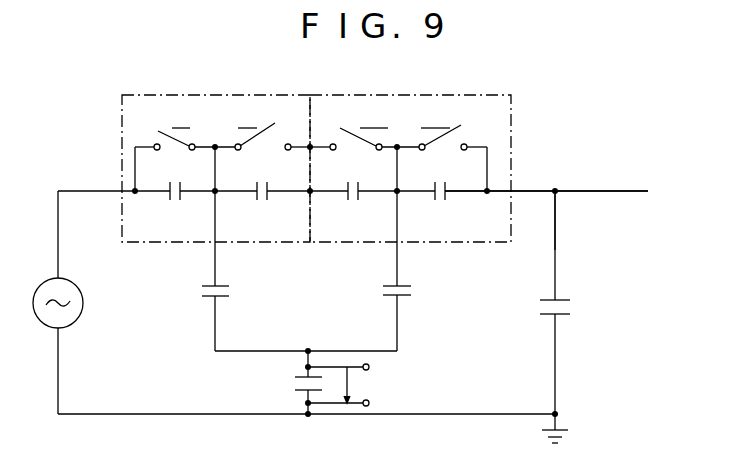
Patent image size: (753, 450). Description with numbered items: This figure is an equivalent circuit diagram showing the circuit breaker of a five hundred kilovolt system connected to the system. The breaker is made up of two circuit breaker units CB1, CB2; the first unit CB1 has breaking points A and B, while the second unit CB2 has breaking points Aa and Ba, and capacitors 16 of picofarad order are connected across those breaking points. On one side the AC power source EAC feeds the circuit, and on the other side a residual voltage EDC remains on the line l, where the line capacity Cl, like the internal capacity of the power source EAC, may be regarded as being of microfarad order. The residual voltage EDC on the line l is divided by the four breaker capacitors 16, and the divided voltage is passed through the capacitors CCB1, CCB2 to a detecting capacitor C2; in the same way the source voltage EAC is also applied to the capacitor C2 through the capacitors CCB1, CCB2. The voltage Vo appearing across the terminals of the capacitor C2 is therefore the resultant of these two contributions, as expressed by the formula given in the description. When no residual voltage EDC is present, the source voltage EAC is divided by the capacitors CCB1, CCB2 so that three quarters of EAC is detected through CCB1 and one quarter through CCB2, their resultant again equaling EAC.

The capacitor 16 is at (175, 201).
The circuit breaker unit CB1 is at (210, 95).
The circuit breaker unit CB2 is at (418, 95).
The capacitor CCB1 is at (198, 288).
The capacitor CCB2 is at (374, 288).
The capacitor C2 is at (291, 384).
The voltage across the terminals of the capacitor C2 Vo is at (344, 385).
The capacity Cl is at (576, 311).
The residual voltage EDC is at (580, 239).
The power source EAC is at (78, 302).
The line l is at (597, 192).